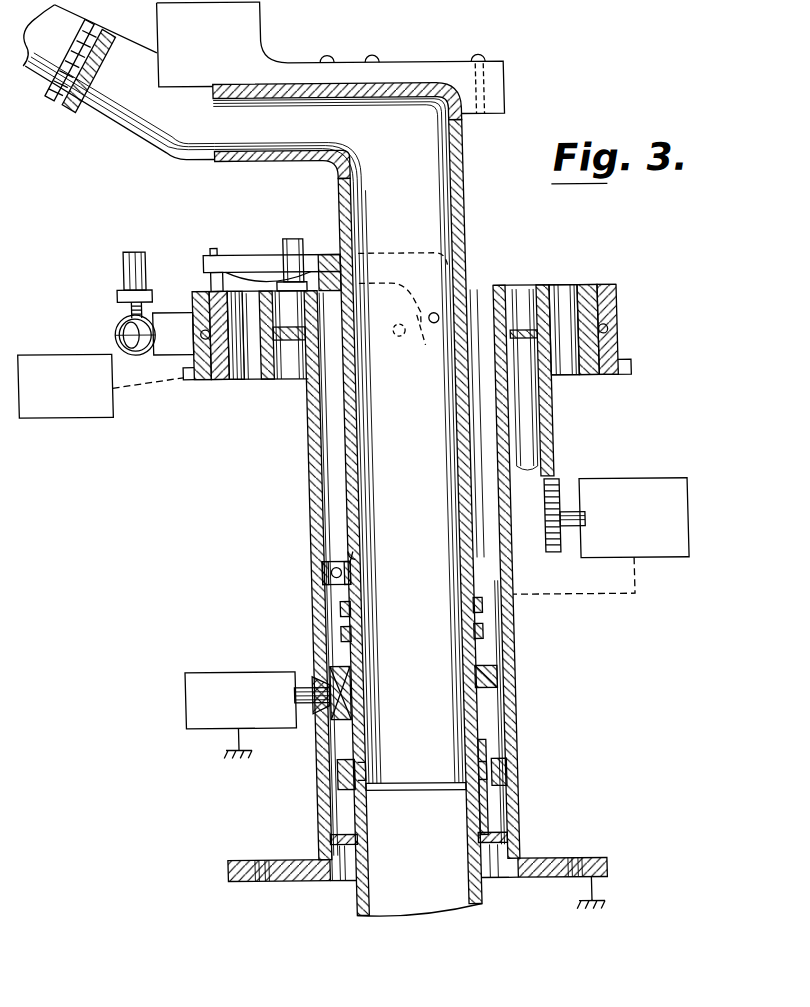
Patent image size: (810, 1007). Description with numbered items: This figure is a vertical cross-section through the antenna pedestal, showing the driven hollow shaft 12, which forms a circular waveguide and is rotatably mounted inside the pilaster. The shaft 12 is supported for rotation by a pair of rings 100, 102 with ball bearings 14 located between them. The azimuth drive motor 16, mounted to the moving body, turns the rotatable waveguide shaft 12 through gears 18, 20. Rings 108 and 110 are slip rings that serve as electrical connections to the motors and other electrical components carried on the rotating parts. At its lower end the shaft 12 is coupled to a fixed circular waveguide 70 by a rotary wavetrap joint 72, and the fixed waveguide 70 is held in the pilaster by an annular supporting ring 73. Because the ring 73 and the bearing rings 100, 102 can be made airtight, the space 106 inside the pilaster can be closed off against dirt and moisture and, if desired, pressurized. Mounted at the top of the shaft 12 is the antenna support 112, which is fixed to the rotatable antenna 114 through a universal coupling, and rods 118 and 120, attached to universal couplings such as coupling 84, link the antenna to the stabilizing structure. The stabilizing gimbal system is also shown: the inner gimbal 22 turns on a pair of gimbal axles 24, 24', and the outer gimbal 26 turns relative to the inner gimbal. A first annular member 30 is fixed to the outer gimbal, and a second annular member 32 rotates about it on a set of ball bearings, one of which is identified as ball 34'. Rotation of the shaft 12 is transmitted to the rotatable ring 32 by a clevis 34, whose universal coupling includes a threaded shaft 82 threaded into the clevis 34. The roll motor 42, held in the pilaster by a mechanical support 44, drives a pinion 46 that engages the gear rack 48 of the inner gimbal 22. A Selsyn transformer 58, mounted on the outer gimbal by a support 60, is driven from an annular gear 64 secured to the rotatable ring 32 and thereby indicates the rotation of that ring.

The hollow shaft 12 is at (470, 201).
The antenna support 112 is at (258, 25).
The rotatable antenna 114 is at (207, 160).
The space 106 is at (481, 654).
The second annular member 32 is at (197, 379).
The first annular member 30 is at (215, 379).
The bearing ball 34' is at (401, 345).
The outer gimbal 26 is at (229, 379).
The annular gear 64 is at (184, 377).
The gimbal axle 24 is at (278, 354).
The inner gimbal 22 is at (269, 291).
The rod 120 is at (295, 238).
The clevis 34 is at (271, 246).
The threaded shaft 82 is at (209, 273).
The rod 118 is at (129, 264).
The support 60 is at (180, 376).
The universal coupling 84 is at (118, 326).
The Selsyn transformer 58 is at (61, 415).
The gimbal axle 24' is at (556, 361).
The gear rack 48 is at (554, 470).
The pinion 46 is at (543, 554).
The roll motor 42 is at (619, 482).
The mechanical support 44 is at (576, 595).
The ring 100 is at (325, 552).
The ball bearings 14 is at (324, 575).
The ring 102 is at (350, 552).
The slip ring 108 is at (334, 607).
The slip ring 110 is at (333, 634).
The gear 20 is at (337, 664).
The gear 18 is at (341, 702).
The azimuth drive motor 16 is at (193, 727).
The rotary wavetrap joint 72 is at (329, 775).
The fixed circular waveguide 70 is at (467, 818).
The annular supporting ring 73 is at (484, 878).